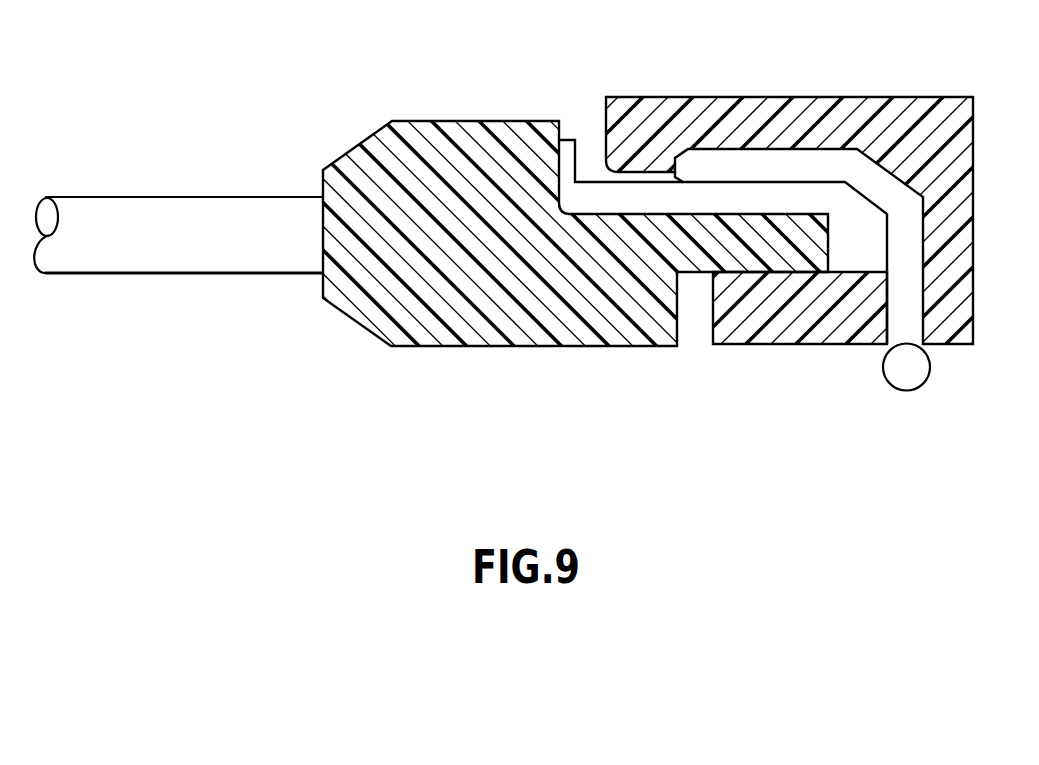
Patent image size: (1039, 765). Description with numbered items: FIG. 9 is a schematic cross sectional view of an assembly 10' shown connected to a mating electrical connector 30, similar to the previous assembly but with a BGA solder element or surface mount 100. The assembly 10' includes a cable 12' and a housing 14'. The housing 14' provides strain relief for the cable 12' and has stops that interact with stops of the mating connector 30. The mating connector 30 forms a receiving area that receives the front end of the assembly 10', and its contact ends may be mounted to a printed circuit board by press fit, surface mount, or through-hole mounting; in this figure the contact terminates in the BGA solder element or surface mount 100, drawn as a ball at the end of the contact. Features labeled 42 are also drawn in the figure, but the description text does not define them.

The assembly 10' is at (536, 229).
The cable 12' is at (178, 261).
The housing 14' is at (547, 235).
The mating electrical connector 30 is at (973, 182).
The gap 42 is at (566, 157).
The BGA solder element or surface mount 100 is at (930, 376).